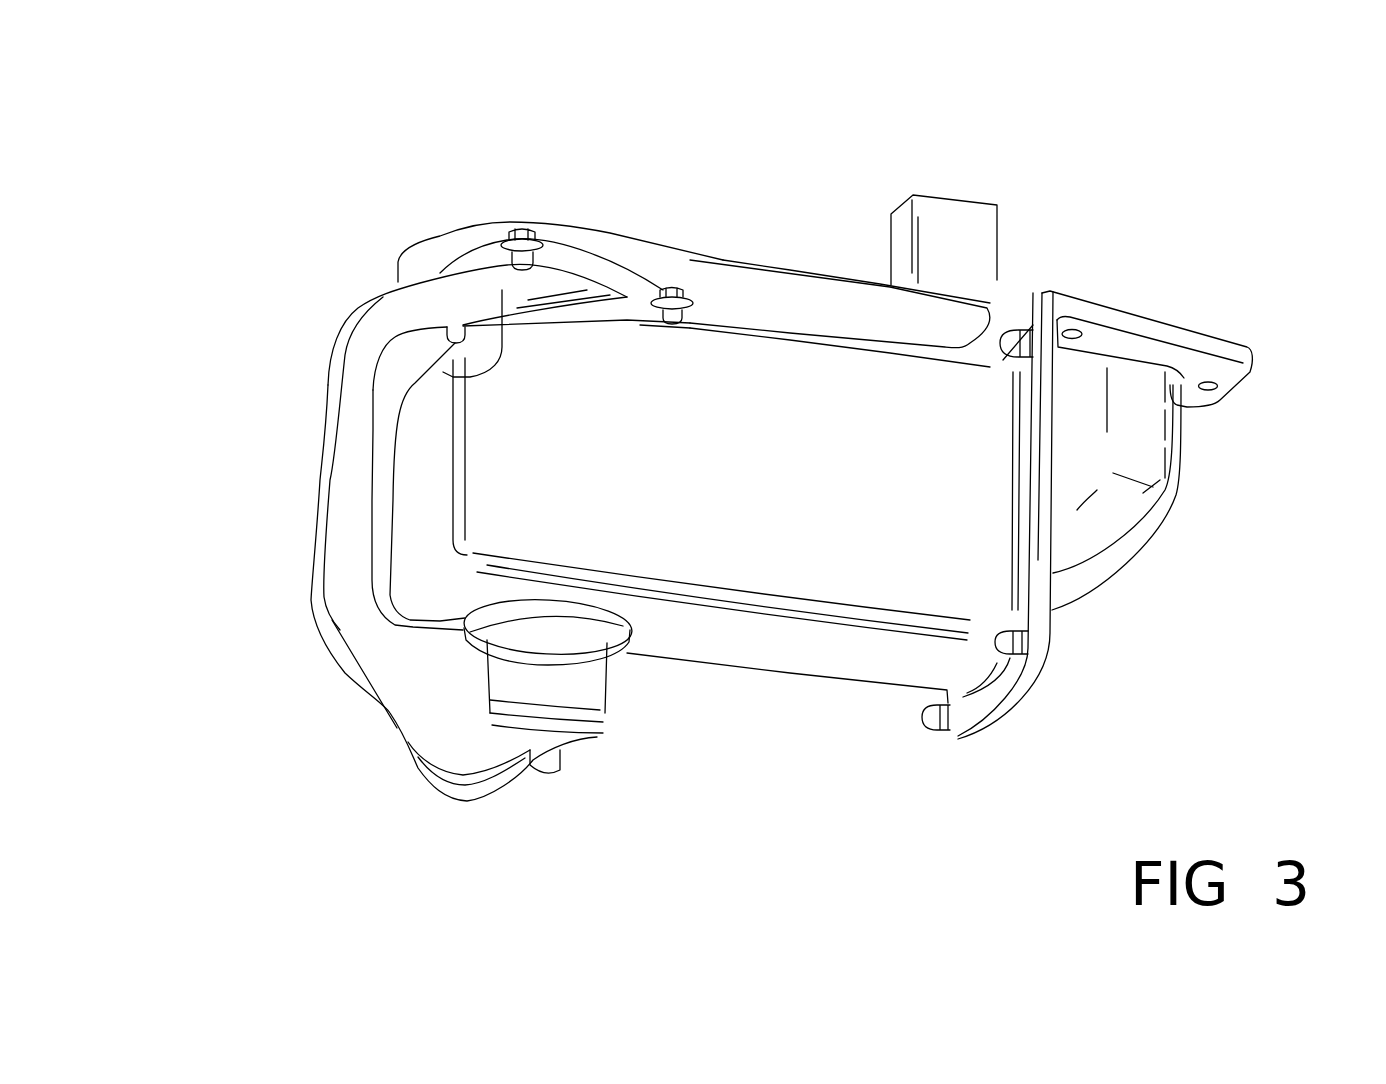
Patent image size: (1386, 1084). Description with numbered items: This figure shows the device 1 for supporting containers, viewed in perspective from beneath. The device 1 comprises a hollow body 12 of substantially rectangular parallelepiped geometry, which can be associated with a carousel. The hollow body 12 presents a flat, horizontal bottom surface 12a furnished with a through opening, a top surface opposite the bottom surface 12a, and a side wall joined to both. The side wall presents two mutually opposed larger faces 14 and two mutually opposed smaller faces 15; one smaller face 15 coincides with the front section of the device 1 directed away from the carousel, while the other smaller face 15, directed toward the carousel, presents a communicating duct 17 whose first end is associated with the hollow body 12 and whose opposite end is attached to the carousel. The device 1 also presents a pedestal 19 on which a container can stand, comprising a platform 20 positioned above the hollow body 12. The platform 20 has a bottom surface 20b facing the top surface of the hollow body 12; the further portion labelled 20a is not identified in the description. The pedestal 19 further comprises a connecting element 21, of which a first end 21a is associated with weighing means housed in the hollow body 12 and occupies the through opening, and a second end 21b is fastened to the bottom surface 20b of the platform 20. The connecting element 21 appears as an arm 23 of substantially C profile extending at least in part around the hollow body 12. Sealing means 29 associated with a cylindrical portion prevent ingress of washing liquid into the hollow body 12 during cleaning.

The device 1 is at (1203, 186).
The hollow body 12 is at (876, 692).
The bottom surface 12a is at (823, 650).
The larger faces 14 is at (927, 440).
The smaller faces 15 is at (1053, 643).
The communicating duct 17 is at (1162, 531).
The pedestal 19 is at (453, 212).
The platform 20 is at (793, 252).
The first plate portion 20a is at (743, 257).
The bottom surface 20b is at (790, 303).
The connecting element 21 is at (330, 674).
The first end 21a is at (498, 785).
The second end 21b is at (452, 376).
The arm 23 is at (318, 517).
The sealing means 29 is at (620, 722).